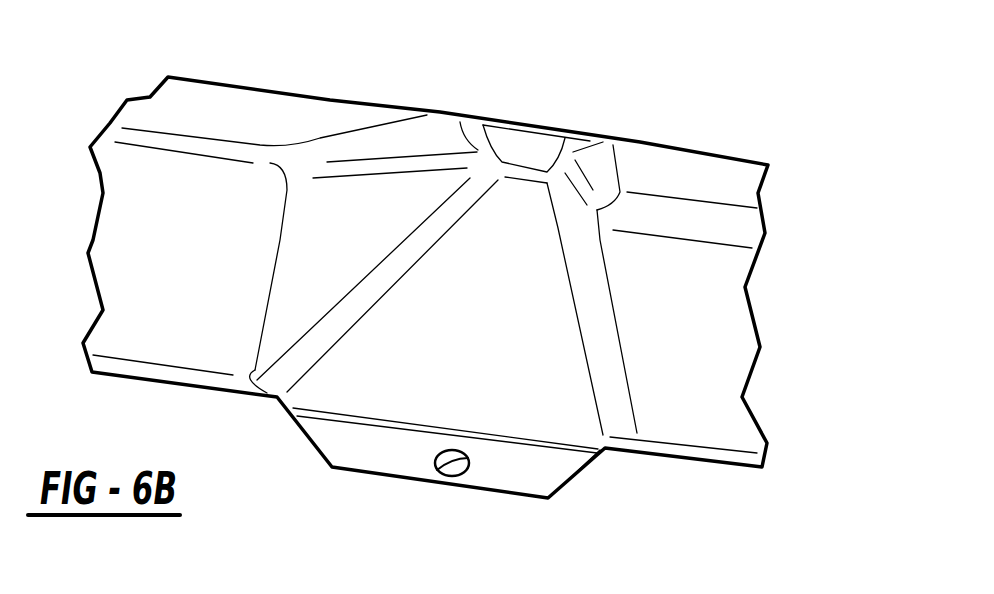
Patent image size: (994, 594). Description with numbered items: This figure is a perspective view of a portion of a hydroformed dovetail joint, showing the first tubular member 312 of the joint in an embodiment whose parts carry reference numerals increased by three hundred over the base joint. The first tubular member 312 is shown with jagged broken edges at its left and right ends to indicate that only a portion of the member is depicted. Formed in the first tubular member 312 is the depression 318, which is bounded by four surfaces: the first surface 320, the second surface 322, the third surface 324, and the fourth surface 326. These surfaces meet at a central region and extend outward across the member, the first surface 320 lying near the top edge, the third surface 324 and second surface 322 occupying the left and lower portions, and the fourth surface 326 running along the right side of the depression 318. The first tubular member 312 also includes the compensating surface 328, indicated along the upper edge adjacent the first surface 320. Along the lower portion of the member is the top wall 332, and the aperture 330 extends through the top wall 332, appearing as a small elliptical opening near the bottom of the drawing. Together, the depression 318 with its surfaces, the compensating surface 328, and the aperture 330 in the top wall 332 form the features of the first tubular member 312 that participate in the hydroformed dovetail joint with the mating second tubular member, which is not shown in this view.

The first tubular member 312 is at (255, 115).
The depression 318 is at (502, 330).
The first surface 320 is at (530, 143).
The second surface 322 is at (400, 373).
The third surface 324 is at (343, 210).
The fourth surface 326 is at (603, 352).
The compensating surface 328 is at (560, 127).
The aperture 330 is at (450, 480).
The top wall 332 is at (533, 477).